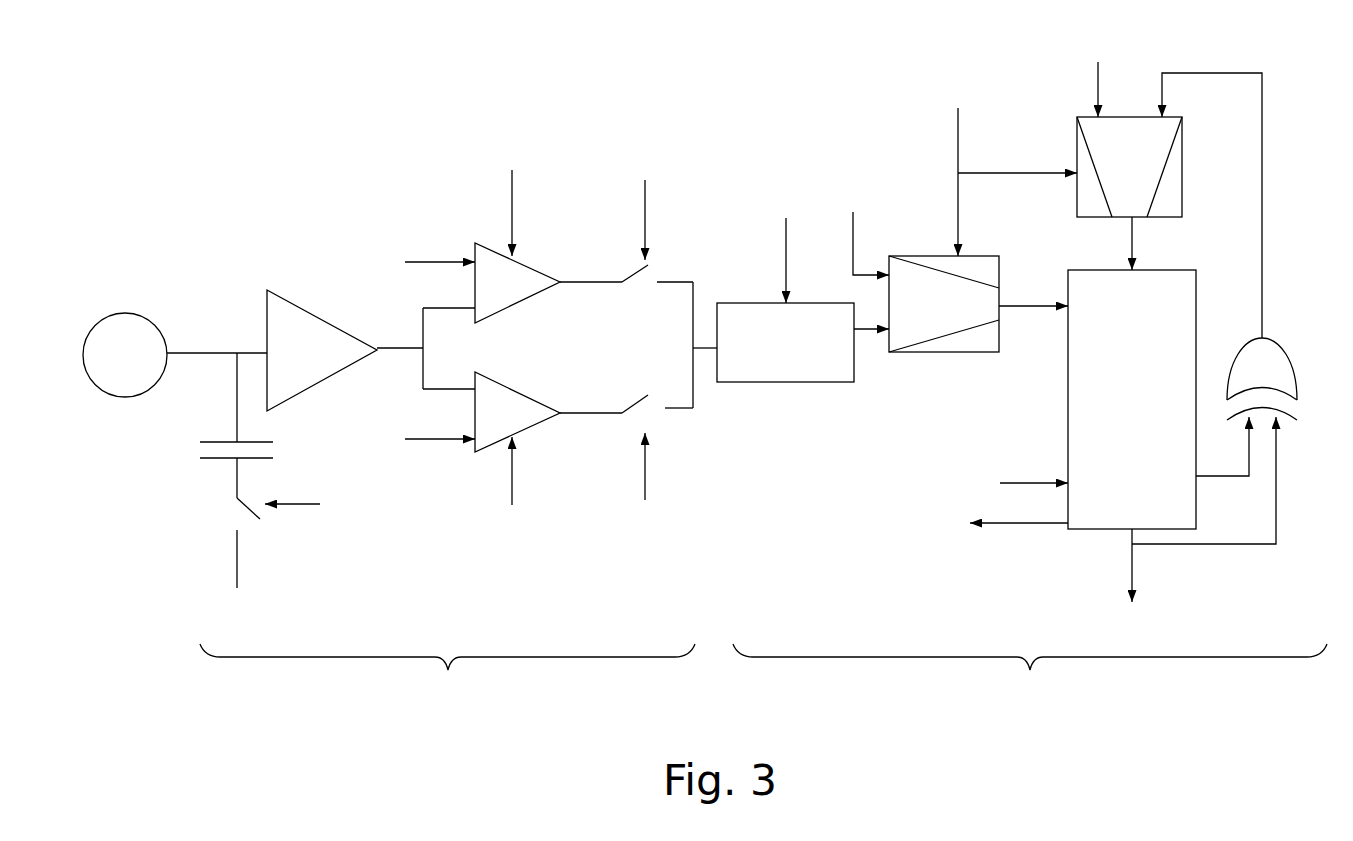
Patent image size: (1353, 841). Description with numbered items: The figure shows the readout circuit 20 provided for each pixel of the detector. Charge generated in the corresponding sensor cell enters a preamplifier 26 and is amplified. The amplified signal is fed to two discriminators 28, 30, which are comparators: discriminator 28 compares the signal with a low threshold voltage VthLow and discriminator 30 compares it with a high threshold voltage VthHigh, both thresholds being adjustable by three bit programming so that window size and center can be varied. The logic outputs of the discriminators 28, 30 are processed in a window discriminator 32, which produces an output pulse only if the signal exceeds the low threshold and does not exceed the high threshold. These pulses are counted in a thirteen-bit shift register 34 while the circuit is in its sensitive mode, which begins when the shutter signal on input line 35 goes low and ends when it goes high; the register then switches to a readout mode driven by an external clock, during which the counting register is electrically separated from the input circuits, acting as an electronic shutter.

The readout circuit 20 is at (335, 123).
The preamplifier 26 is at (285, 295).
The discriminator 28 is at (533, 267).
The discriminator 30 is at (537, 425).
The window discriminator 32 is at (788, 383).
The 13-bit shift register 34 is at (1068, 373).
The input line 35 is at (958, 200).